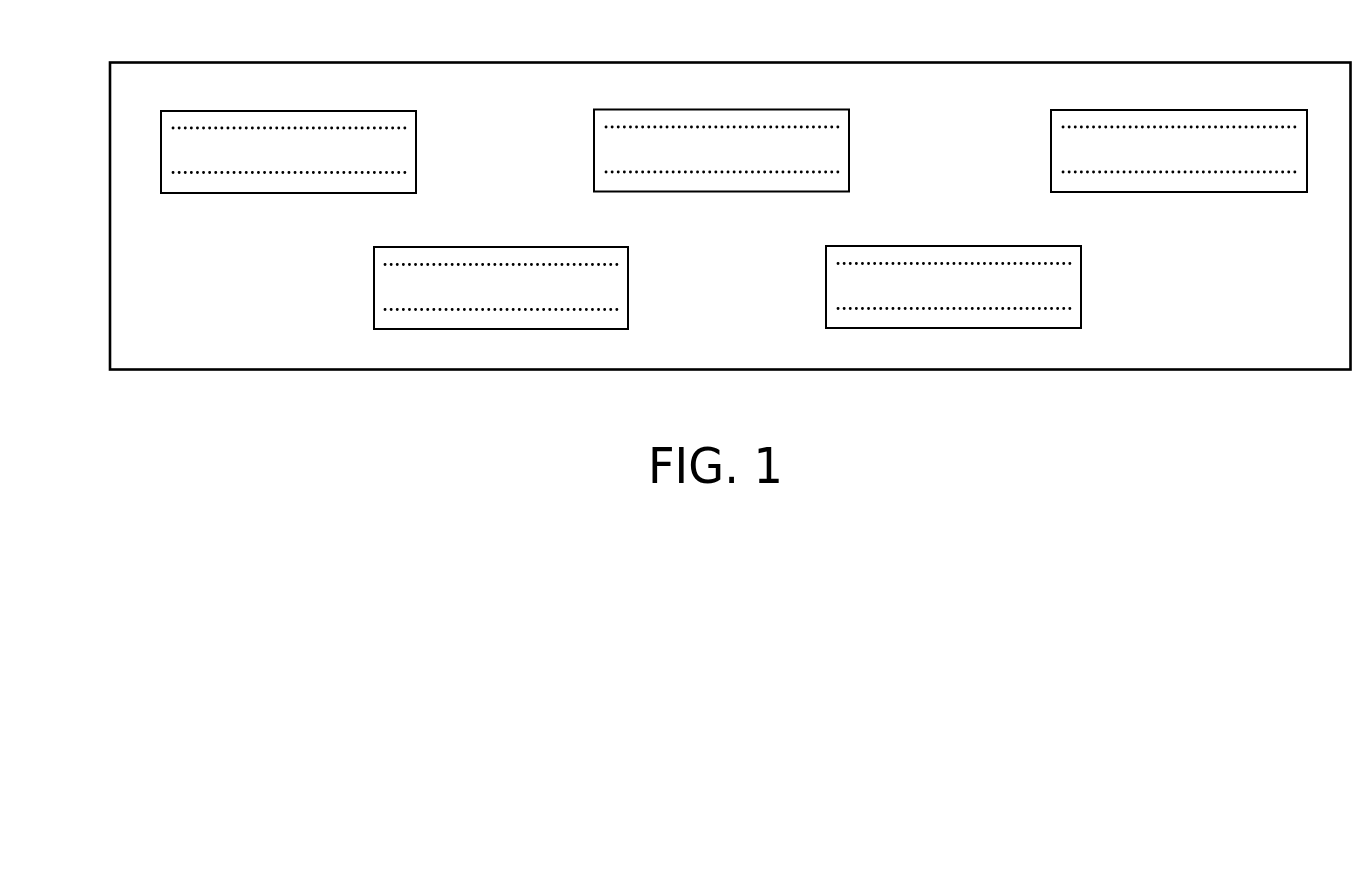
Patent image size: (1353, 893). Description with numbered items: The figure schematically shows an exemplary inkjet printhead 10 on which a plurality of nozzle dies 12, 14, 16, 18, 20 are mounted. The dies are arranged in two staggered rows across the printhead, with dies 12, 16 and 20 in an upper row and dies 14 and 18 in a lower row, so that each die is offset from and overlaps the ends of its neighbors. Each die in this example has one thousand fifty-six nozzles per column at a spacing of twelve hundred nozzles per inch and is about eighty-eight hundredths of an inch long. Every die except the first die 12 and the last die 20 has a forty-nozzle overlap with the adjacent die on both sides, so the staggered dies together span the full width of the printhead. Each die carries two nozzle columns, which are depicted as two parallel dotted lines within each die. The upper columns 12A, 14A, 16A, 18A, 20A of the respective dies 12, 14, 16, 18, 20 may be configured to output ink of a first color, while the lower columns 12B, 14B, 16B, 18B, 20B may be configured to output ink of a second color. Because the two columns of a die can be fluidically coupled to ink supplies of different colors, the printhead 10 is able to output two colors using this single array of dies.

The inkjet printhead 10 is at (110, 238).
The nozzle die 12 is at (288, 110).
The nozzle column 12A is at (253, 128).
The nozzle column 12B is at (292, 172).
The nozzle die 14 is at (467, 247).
The nozzle column 14A is at (430, 265).
The nozzle column 14B is at (467, 309).
The nozzle die 16 is at (748, 109).
The nozzle column 16A is at (713, 127).
The nozzle column 16B is at (748, 172).
The nozzle die 18 is at (960, 246).
The nozzle column 18A is at (925, 263).
The nozzle column 18B is at (962, 308).
The nozzle die 20 is at (1203, 110).
The nozzle column 20A is at (1168, 127).
The nozzle column 20B is at (1243, 172).